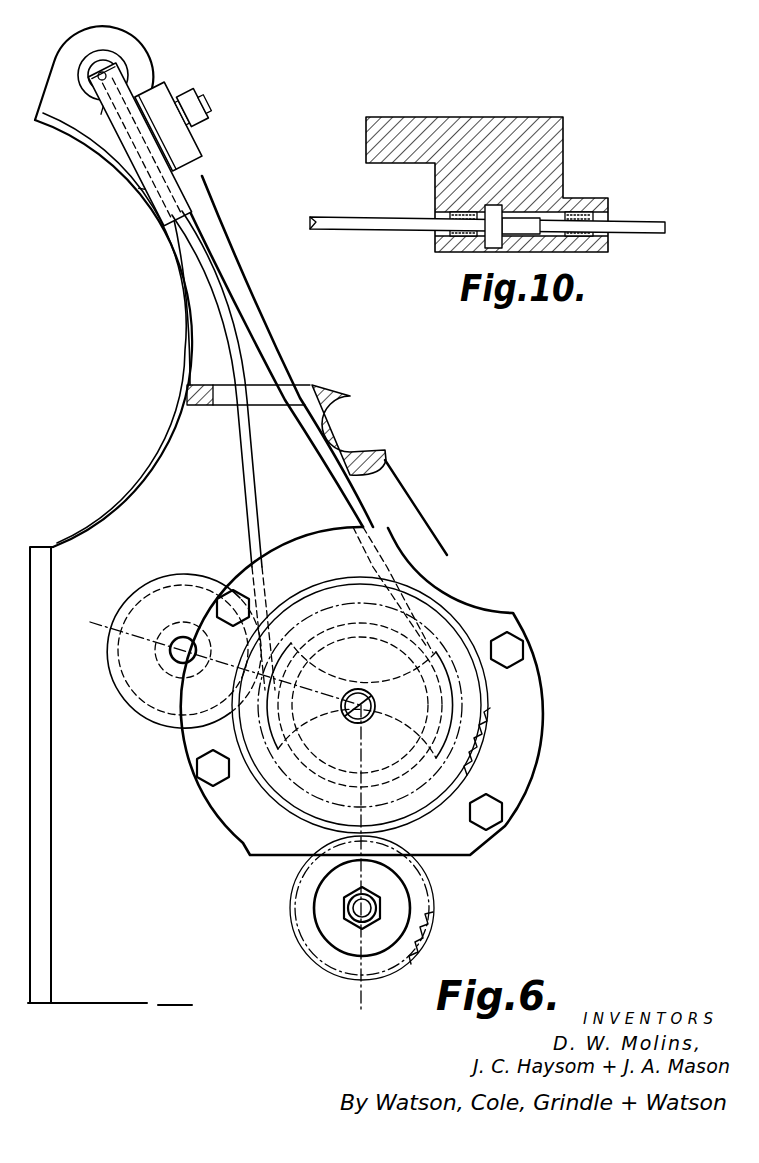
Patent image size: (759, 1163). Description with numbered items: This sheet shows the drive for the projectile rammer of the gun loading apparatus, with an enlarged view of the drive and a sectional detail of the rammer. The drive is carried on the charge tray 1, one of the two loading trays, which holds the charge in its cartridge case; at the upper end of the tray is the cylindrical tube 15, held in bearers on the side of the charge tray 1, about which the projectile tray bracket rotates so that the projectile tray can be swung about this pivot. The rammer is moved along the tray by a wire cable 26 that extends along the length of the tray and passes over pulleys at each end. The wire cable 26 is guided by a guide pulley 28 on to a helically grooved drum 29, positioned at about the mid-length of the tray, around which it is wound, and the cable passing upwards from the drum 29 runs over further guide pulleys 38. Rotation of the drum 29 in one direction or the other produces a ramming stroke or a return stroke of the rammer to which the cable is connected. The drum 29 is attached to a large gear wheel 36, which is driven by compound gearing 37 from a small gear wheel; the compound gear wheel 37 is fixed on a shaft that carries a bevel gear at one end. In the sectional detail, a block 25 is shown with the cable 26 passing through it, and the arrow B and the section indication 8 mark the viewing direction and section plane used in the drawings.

In FIG. 6, the charge tray 1 is at (185, 352).
In FIG. 6, the cylindrical tube 15 is at (110, 54).
In FIG. 6, the guide pulleys 38 is at (187, 193).
In FIG. 6, the wire cable 26 is at (246, 335).
In FIG. 10, the wire cable 26 is at (402, 226).
In FIG. 6, the guide pulley 28 is at (163, 597).
In FIG. 6, the helically grooved drum 29 is at (452, 704).
In FIG. 6, the large gear wheel 36 is at (492, 737).
In FIG. 6, the compound gearing 37 is at (435, 920).
In FIG. 10, the block 25 is at (447, 118).
In FIG. 6, the section line 8- 8 is at (91, 630).
In FIG. 6, the direction arrow B is at (486, 454).